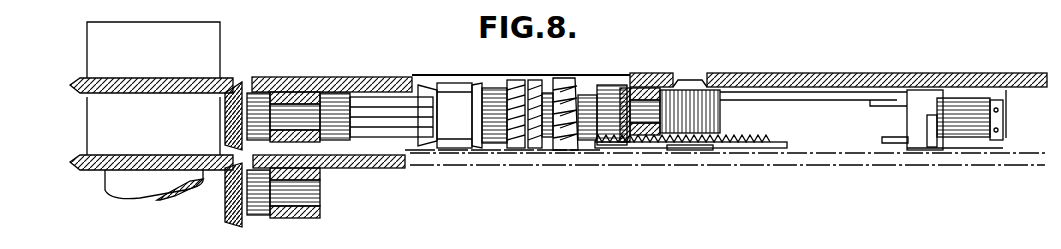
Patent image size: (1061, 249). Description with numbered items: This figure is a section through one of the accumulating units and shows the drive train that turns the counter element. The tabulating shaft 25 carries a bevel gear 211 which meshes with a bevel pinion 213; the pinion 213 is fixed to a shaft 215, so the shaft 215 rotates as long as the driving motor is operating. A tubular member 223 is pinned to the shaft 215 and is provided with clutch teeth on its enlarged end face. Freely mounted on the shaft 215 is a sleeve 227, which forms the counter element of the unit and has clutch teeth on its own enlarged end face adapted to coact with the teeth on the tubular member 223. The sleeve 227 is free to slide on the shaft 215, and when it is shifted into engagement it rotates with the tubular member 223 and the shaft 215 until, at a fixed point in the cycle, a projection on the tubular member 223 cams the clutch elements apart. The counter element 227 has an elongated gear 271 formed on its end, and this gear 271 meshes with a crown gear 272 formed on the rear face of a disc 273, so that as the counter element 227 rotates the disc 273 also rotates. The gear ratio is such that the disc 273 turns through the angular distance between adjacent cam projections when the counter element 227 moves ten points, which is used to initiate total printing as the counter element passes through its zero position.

The bevel gear 211 is at (75, 157).
The tabulating shaft 25 is at (135, 190).
The bevel pinion 213 is at (241, 85).
The shaft 215 is at (367, 108).
The tubular member 223 is at (492, 93).
The sleeve 227 is at (565, 92).
The elongated gear 271 is at (633, 77).
The crown gear 272 is at (752, 137).
The disc 273 is at (773, 145).